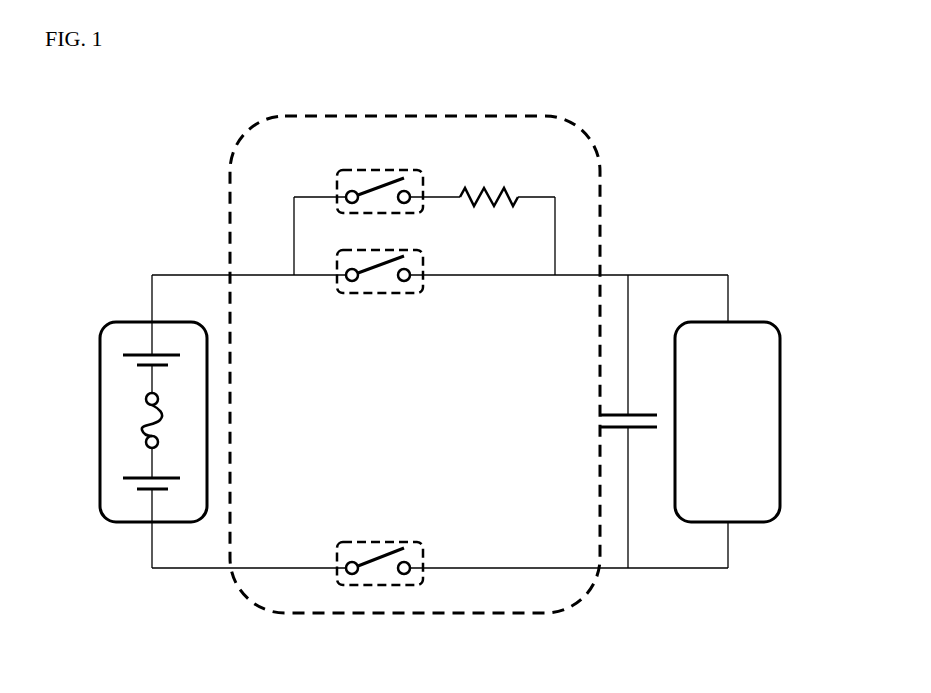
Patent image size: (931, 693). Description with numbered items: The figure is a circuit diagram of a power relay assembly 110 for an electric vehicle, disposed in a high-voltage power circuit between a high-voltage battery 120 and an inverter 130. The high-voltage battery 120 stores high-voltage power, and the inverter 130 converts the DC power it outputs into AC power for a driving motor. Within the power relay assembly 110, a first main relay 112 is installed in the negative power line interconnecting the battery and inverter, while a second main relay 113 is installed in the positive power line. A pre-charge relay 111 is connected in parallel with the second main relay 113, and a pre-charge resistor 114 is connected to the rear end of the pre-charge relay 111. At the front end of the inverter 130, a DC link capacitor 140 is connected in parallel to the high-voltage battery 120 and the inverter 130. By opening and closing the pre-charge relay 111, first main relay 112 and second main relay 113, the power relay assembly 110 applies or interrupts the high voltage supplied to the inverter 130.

The power relay assembly 110 is at (550, 115).
The pre-charge relay 111 is at (397, 170).
The first main relay 112 is at (398, 543).
The second main relay 113 is at (420, 251).
The pre-charge resistor 114 is at (518, 193).
The high-voltage battery 120 is at (127, 322).
The inverter 130 is at (760, 322).
The DC link capacitor 140 is at (641, 410).